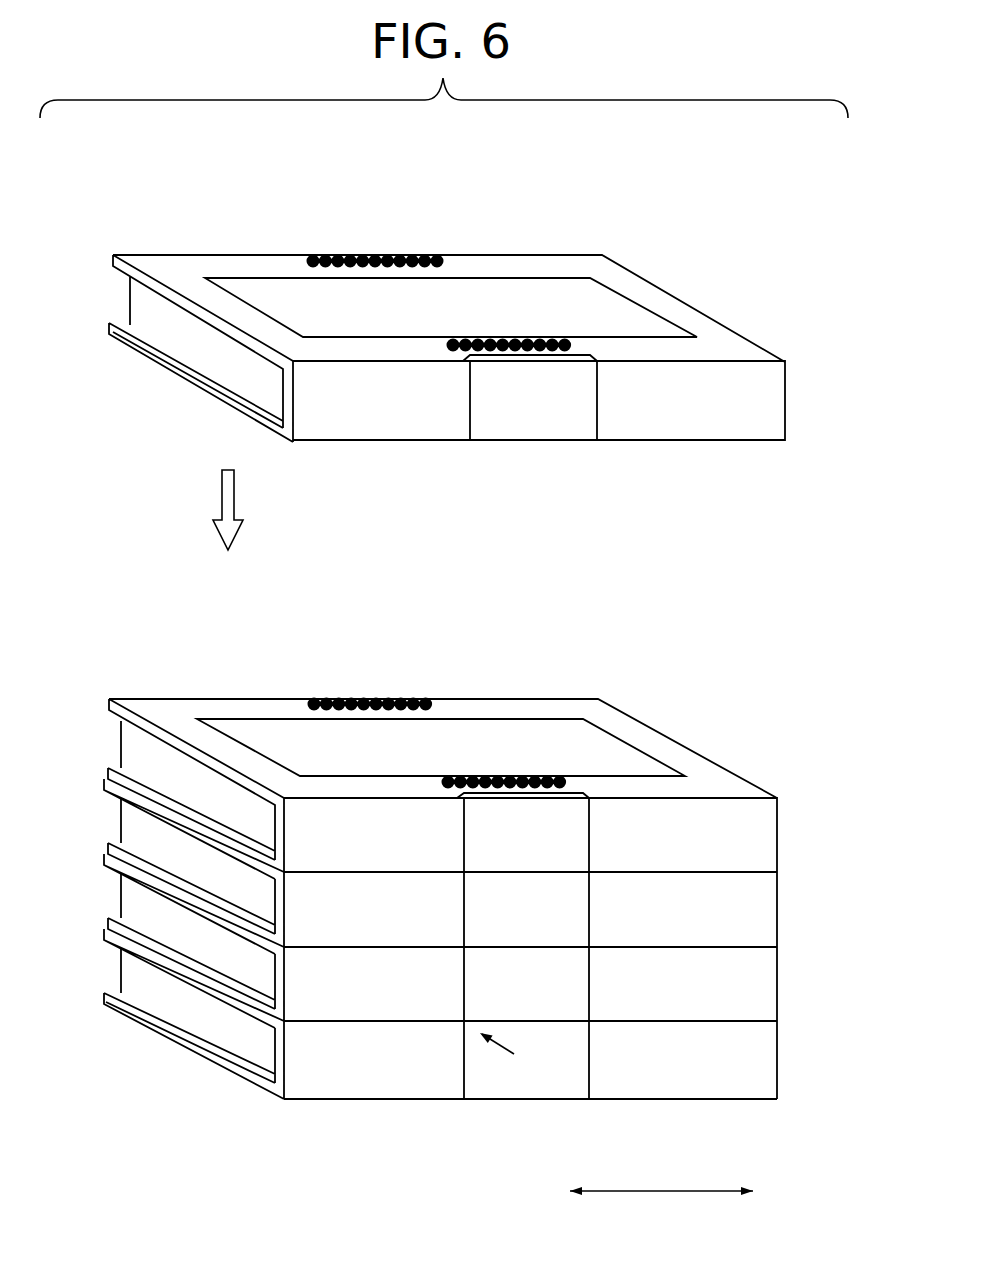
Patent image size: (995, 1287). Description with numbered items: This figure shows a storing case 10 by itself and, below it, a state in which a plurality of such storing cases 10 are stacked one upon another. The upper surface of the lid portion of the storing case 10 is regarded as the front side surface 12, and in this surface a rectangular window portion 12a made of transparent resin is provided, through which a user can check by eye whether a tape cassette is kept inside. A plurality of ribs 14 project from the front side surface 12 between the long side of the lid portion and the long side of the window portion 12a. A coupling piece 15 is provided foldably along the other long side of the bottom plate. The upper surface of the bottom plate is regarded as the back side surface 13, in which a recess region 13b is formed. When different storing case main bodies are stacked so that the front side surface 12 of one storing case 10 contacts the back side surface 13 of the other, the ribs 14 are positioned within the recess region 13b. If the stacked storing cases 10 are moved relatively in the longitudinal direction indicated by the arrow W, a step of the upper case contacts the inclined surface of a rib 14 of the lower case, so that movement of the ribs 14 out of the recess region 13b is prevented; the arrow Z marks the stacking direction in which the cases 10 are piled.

The storing case 10 is at (126, 243).
The front side surface 12 is at (213, 262).
The window portion 12a is at (547, 298).
The back side surface 13 is at (363, 1103).
The recess region 13b is at (557, 423).
The ribs 14 is at (563, 770).
The coupling piece 15 is at (767, 408).
The stacking direction Z is at (497, 1046).
The arrow W is at (665, 1193).